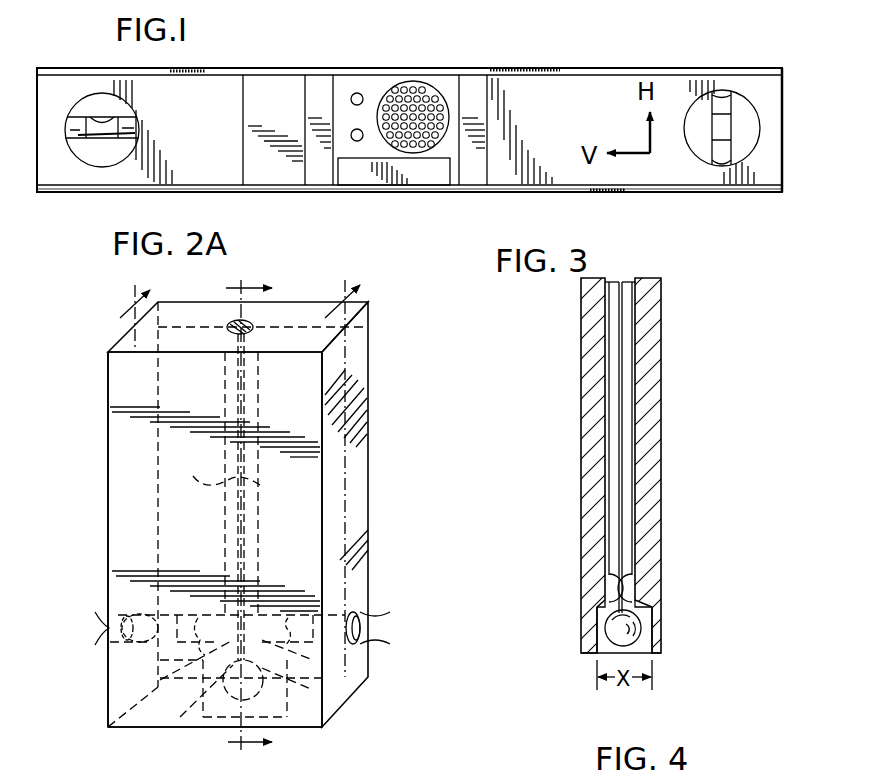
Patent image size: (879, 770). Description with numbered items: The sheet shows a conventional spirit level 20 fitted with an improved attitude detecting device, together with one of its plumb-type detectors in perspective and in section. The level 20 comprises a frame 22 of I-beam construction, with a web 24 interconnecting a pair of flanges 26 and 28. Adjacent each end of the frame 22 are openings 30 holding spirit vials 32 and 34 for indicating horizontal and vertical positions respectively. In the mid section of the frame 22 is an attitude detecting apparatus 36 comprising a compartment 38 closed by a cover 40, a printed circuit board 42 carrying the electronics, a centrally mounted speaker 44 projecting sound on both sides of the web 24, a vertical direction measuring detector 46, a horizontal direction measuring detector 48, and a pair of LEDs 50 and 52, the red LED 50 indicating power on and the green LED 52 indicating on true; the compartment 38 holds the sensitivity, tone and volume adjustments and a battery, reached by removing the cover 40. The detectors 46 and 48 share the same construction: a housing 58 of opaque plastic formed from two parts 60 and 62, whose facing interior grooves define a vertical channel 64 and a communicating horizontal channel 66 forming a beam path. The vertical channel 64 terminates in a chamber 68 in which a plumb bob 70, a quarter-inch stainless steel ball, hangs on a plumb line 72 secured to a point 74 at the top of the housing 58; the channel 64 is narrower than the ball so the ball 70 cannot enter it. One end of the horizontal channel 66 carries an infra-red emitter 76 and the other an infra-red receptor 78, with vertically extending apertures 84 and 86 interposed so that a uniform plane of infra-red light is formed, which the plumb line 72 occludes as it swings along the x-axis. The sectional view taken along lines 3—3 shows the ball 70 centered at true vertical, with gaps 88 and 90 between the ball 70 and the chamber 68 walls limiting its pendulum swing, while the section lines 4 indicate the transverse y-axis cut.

In FIG. 1, the level 20 is at (612, 62).
In FIG. 1, the frame 22 is at (787, 160).
In FIG. 1, the web 24 is at (752, 177).
In FIG. 1, the flange 26 is at (527, 73).
In FIG. 1, the flange 28 is at (672, 197).
In FIG. 1, the opening 30 is at (92, 155).
In FIG. 1, the spirit vial 32 is at (72, 125).
In FIG. 1, the spirit vial 34 is at (728, 96).
In FIG. 1, the attitude detecting apparatus 36 is at (402, 60).
In FIG. 1, the compartment 38 is at (243, 115).
In FIG. 1, the cover 40 is at (262, 175).
In FIG. 1, the printed circuit board 42 is at (319, 178).
In FIG. 1, the speaker 44 is at (425, 90).
In FIG. 1, the vertical direction measuring detector 46 is at (398, 175).
In FIG. 2A, the vertical direction measuring detector 46 is at (376, 440).
In FIG. 1, the horizontal direction measuring detector 48 is at (472, 175).
In FIG. 1, the LED 50 is at (363, 93).
In FIG. 1, the LED 52 is at (352, 133).
In FIG. 2A, the housing 58 is at (375, 388).
In FIG. 2A, the housing part 60 is at (368, 486).
In FIG. 3, the housing part 60 is at (650, 338).
In FIG. 2A, the housing part 62 is at (108, 525).
In FIG. 3, the housing part 62 is at (588, 428).
In FIG. 2A, the vertical channel 64 is at (222, 483).
In FIG. 2A, the horizontal channel 66 is at (178, 585).
In FIG. 2A, the chamber 68 is at (165, 730).
In FIG. 3, the chamber 68 is at (652, 650).
In FIG. 2A, the plumb bob 70 is at (222, 735).
In FIG. 3, the plumb bob 70 is at (600, 652).
In FIG. 2A, the plumb line 72 is at (262, 498).
In FIG. 3, the plumb line 72 is at (622, 422).
In FIG. 2A, the point 74 is at (236, 333).
In FIG. 3, the point 74 is at (622, 282).
In FIG. 2A, the infra-red emitter 76 is at (362, 628).
In FIG. 2A, the infra-red receptor 78 is at (108, 628).
In FIG. 2A, the aperture 84 is at (165, 652).
In FIG. 2A, the aperture 86 is at (297, 595).
In FIG. 3, the gap 88 is at (603, 618).
In FIG. 3, the gap 90 is at (645, 624).
In FIG. 2A, the section line 3- 3 is at (243, 516).
In FIG. 2A, the section line 4- 4 is at (234, 305).